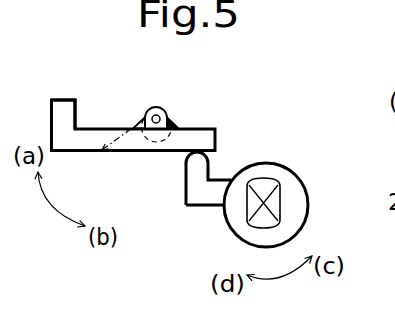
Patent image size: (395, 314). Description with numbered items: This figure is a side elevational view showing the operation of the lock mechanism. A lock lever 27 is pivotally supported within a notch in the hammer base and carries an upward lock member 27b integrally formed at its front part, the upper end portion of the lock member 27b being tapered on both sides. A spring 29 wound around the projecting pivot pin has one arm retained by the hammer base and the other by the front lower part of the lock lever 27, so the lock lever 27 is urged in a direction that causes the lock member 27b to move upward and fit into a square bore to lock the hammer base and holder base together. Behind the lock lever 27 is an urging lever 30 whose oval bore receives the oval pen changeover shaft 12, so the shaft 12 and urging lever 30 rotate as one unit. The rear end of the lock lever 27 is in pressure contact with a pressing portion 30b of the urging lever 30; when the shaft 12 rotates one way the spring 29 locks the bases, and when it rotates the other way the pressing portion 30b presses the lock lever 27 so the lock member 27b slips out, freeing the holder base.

The lock lever 27 is at (138, 152).
The lock member 27b is at (61, 109).
The spring 29 is at (136, 128).
The pressing portion 30b is at (187, 168).
The urging lever 30 is at (290, 221).
The pen changeover shaft 12 is at (250, 210).